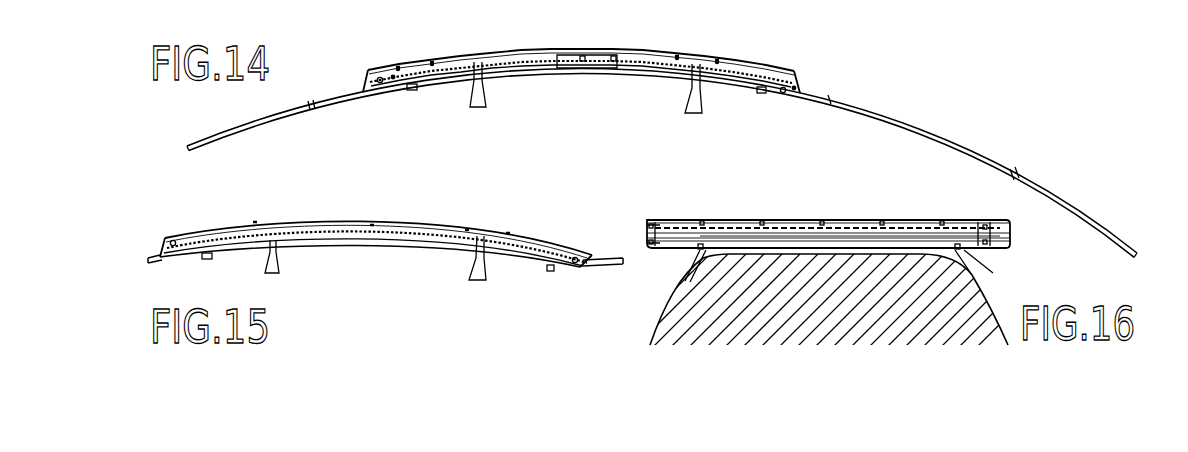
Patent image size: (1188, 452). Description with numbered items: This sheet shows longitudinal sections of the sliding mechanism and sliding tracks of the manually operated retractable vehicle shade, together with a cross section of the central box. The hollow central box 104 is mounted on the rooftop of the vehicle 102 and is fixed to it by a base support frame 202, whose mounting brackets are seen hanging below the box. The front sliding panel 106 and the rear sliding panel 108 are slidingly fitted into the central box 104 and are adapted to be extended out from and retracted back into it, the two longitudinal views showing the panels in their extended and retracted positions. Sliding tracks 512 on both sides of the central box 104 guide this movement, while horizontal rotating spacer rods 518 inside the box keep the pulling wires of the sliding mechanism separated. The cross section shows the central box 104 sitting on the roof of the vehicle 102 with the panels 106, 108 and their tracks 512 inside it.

In FIG. 16, the vehicle 102 is at (817, 300).
In FIG. 14, the hollow central box 104 is at (553, 65).
In FIG. 14, the front sliding panel 106 is at (930, 130).
In FIG. 15, the front sliding panel 106 is at (253, 222).
In FIG. 16, the front sliding panel 106 is at (790, 220).
In FIG. 14, the rear sliding panel 108 is at (350, 88).
In FIG. 15, the rear sliding panel 108 is at (292, 245).
In FIG. 16, the rear sliding panel 108 is at (853, 232).
In FIG. 14, the base support frame 202 is at (690, 90).
In FIG. 15, the base support frame 202 is at (467, 260).
In FIG. 16, the base support frame 202 is at (893, 266).
In FIG. 16, the sliding tracks 512 is at (645, 232).
In FIG. 14, the horizontal rotating spacer rods 518 is at (432, 70).
In FIG. 15, the horizontal rotating spacer rods 518 is at (370, 225).